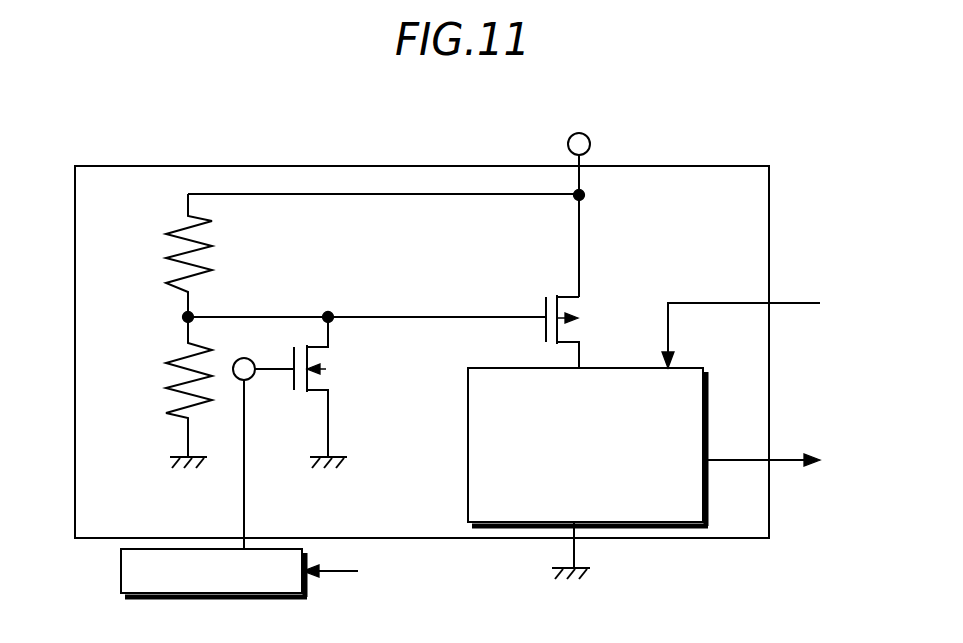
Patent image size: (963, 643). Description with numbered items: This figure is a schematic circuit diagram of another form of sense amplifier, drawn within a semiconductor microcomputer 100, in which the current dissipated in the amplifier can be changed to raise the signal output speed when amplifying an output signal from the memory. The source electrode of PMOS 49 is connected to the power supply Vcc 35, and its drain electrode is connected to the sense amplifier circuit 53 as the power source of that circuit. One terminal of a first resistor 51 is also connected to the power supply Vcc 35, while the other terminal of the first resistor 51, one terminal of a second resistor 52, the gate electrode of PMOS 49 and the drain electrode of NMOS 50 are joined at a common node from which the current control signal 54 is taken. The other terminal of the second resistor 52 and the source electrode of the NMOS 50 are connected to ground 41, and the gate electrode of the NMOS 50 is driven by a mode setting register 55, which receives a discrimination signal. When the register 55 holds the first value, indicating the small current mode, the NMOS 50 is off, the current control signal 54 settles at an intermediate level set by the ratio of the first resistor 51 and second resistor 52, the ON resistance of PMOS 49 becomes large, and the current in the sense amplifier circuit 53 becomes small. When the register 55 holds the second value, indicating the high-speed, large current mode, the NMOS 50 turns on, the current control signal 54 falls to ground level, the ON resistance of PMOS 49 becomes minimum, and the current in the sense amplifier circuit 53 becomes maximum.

The semiconductor microcomputer 100 is at (224, 141).
The power supply Vcc 35 is at (620, 164).
The first resistor 51 is at (167, 255).
The second resistor 52 is at (170, 392).
The current control signal 54 is at (365, 273).
The PMOS 49 is at (582, 331).
The NMOS 50 is at (299, 387).
The ground 41 is at (335, 483).
The sense amplifier circuit 53 is at (669, 441).
The mode setting register 55 is at (325, 490).